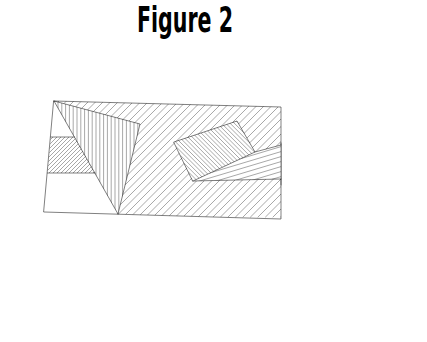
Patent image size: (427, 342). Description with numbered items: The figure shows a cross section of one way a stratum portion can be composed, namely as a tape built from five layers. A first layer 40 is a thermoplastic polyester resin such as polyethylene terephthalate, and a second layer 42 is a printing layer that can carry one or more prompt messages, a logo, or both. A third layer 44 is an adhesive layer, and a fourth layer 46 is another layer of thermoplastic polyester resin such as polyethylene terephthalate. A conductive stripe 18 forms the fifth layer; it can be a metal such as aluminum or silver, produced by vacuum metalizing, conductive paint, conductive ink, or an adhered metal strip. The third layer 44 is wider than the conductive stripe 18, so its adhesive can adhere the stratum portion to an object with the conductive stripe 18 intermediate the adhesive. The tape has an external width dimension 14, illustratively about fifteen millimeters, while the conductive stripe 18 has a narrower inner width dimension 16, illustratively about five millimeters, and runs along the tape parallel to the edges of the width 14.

The external width dimension 14 is at (282, 106).
The inner width dimension 16 is at (282, 143).
The conductive stripe 18 is at (263, 172).
The first layer 40 is at (52, 192).
The second layer 42 is at (72, 169).
The third layer 44 is at (117, 174).
The fourth layer 46 is at (208, 150).